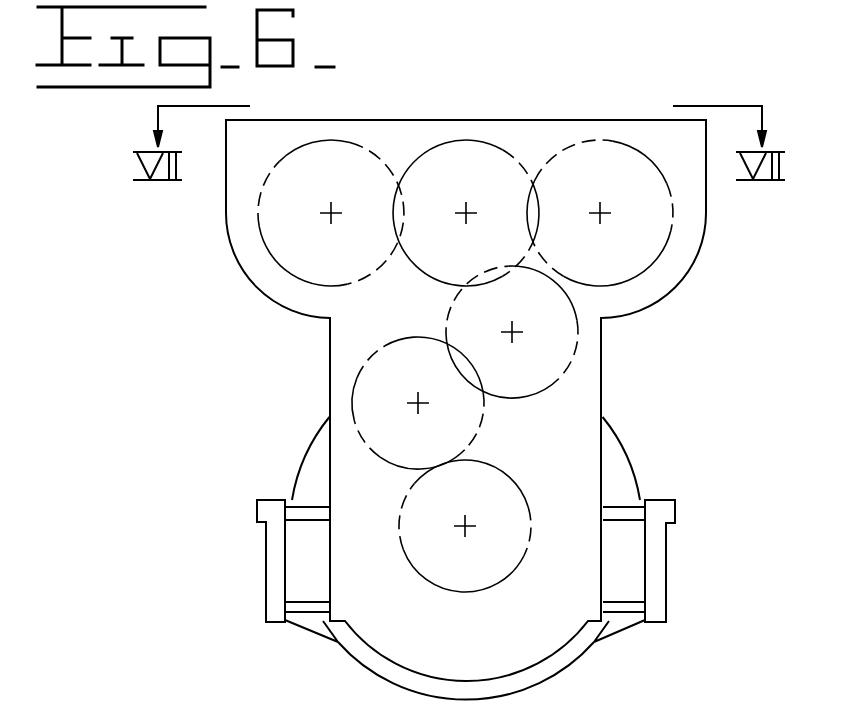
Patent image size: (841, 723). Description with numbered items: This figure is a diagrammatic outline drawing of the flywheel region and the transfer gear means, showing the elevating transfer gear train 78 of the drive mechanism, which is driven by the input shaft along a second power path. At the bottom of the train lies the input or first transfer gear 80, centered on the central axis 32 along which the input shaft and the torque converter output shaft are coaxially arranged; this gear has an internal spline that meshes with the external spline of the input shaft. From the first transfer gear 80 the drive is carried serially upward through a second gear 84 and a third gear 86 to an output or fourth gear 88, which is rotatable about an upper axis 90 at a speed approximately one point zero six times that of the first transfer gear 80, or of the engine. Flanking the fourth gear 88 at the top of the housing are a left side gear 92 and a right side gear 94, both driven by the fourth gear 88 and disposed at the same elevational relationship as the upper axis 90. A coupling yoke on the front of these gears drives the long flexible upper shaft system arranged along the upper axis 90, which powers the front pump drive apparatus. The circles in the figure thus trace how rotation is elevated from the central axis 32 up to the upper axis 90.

The elevating transfer gear train 78 is at (467, 447).
The right side gear 94 is at (337, 140).
The fourth gear 88 is at (467, 140).
The left side gear 92 is at (612, 141).
The upper axis 90 is at (467, 211).
The third gear 86 is at (560, 378).
The second gear 84 is at (352, 407).
The first transfer gear 80 is at (511, 572).
The central axis 32 is at (468, 524).